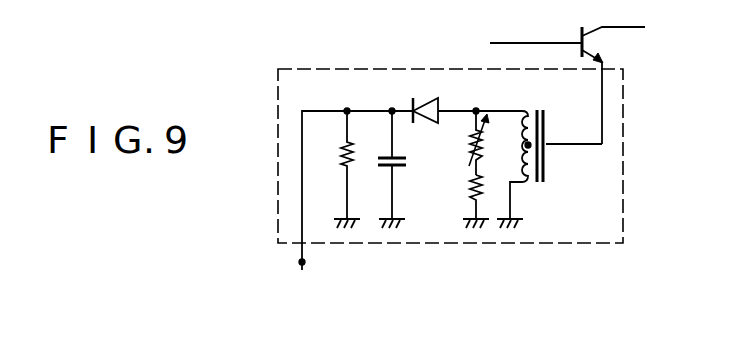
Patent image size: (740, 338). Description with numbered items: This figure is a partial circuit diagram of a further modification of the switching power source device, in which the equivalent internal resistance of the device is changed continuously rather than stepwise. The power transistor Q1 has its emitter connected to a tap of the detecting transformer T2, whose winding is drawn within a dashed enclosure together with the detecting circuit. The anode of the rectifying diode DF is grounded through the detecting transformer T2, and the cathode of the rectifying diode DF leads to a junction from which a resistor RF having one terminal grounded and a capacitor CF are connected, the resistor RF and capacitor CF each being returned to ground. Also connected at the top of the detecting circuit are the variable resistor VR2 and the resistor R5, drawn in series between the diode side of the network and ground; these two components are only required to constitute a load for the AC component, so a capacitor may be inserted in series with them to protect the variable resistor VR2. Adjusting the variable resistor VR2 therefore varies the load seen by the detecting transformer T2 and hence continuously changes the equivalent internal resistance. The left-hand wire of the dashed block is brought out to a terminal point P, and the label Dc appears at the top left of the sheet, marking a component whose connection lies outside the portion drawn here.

The diode Dc is at (52, 13).
The terminal point P is at (301, 280).
The resistor RF is at (335, 168).
The capacitor CF is at (382, 168).
The rectifying diode DF is at (440, 101).
The variable resistor VR2 is at (456, 141).
The resistor R5 is at (463, 201).
The detecting transformer T2 is at (541, 106).
The power transistor Q1 is at (567, 72).